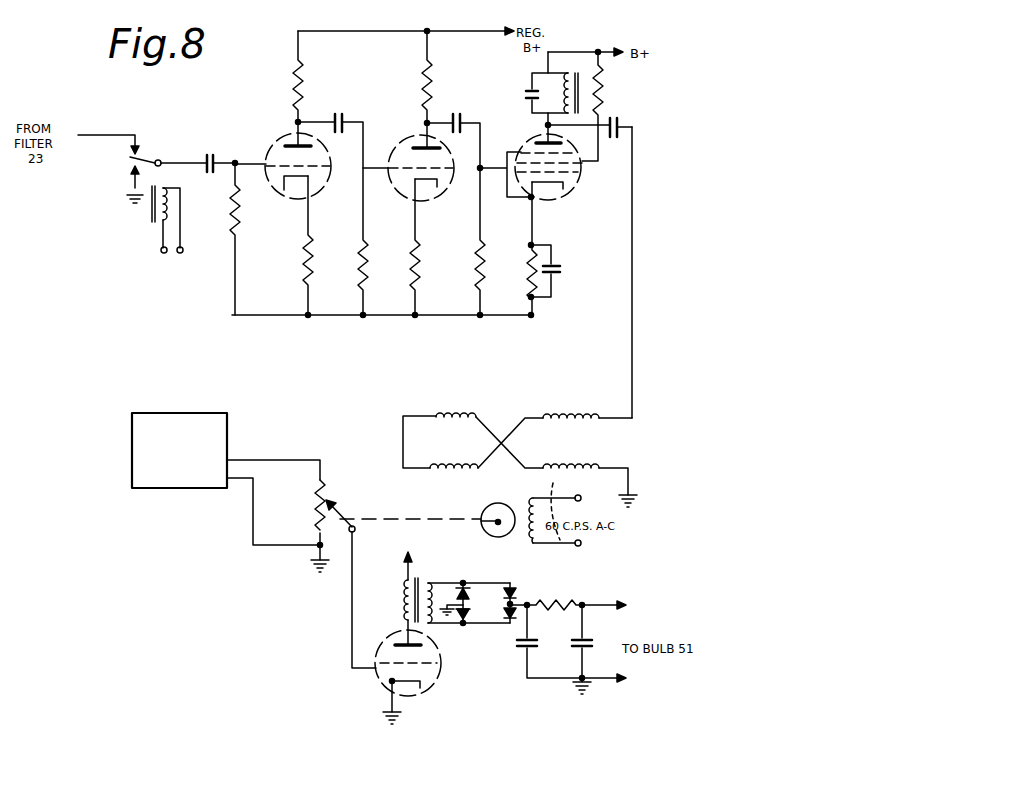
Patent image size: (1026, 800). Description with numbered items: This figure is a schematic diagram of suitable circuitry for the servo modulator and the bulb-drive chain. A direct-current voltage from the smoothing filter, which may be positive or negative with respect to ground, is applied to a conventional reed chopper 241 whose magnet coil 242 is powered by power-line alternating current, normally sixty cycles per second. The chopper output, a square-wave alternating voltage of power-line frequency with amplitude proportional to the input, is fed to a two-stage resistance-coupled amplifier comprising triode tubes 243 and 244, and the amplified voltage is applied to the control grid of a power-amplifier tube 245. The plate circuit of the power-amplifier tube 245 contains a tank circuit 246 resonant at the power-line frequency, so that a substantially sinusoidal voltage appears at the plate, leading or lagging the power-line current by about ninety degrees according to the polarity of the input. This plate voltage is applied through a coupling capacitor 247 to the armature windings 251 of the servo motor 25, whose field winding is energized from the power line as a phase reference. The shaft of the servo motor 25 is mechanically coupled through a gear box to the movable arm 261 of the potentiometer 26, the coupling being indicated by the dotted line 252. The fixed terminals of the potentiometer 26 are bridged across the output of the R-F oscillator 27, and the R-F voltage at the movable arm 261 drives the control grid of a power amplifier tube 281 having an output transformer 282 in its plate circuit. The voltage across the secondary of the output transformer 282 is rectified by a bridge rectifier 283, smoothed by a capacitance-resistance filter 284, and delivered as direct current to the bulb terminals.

The reed chopper 241 is at (148, 156).
The magnet coil 242 is at (167, 207).
The triode tube 243 is at (290, 198).
The triode tube 244 is at (402, 196).
The power-amplifier tube 245 is at (566, 188).
The tank circuit 246 is at (530, 82).
The coupling capacitor 247 is at (620, 125).
The armature windings 251 is at (503, 421).
The servo motor 25 is at (487, 505).
The dotted line 252 is at (384, 518).
The potentiometer 26 is at (312, 510).
The movable arm 261 is at (341, 510).
The R-F oscillator 27 is at (150, 488).
The power amplifier tube 281 is at (437, 680).
The output transformer 282 is at (425, 580).
The bridge rectifier 283 is at (485, 596).
The capacitance-resistance filter 284 is at (571, 647).